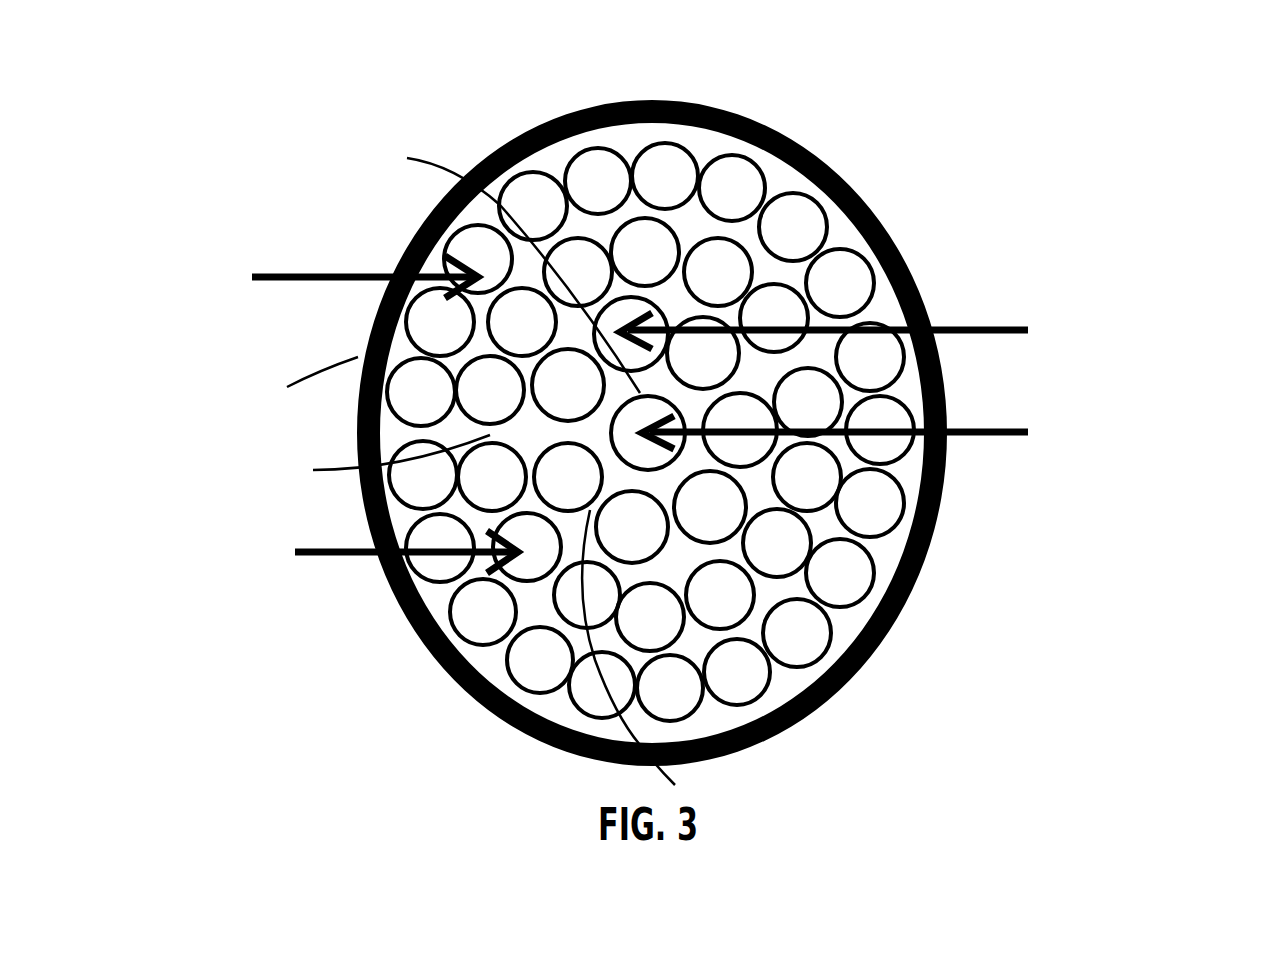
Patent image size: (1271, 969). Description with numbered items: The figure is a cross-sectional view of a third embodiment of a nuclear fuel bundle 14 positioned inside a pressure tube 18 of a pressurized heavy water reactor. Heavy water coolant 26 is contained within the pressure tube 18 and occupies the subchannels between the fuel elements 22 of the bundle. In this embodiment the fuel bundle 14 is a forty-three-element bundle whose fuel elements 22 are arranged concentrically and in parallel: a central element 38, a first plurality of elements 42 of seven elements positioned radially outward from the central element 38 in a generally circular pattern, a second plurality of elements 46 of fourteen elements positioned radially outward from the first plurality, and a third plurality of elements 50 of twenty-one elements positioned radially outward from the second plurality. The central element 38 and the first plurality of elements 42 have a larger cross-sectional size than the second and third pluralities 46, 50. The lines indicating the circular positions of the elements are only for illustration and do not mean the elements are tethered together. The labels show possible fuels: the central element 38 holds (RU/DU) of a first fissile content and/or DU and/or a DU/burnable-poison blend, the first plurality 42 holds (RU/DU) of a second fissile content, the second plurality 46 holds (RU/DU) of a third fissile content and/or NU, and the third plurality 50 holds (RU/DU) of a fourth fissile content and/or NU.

The fuel bundle 14 is at (550, 165).
The pressure tube 18 is at (710, 109).
The fuel elements 22 is at (810, 473).
The heavy water coolant 26 is at (780, 192).
The central element 38 is at (498, 261).
The first plurality of elements 42 is at (655, 655).
The second plurality of elements 46 is at (375, 461).
The third plurality of elements 50 is at (300, 388).